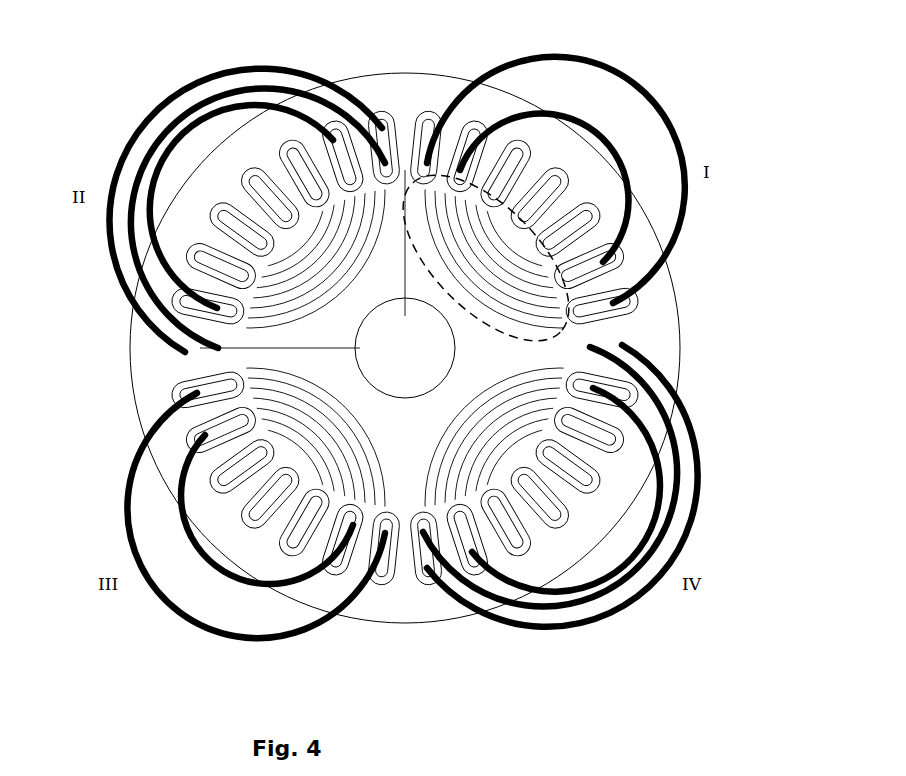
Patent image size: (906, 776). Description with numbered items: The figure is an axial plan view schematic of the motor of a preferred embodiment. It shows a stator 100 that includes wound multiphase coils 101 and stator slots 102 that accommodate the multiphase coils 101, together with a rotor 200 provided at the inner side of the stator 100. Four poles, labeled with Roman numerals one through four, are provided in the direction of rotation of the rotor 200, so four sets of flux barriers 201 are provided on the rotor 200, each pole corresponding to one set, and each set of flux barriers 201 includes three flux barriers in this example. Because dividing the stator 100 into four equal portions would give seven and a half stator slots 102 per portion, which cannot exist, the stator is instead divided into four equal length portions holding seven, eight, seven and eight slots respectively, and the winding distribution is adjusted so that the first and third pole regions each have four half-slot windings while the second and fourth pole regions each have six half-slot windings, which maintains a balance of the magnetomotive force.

The stator 100 is at (394, 100).
The multiphase coils 101 is at (196, 76).
The stator slots 102 is at (429, 116).
The rotor 200 is at (404, 447).
The flux barriers 201 is at (580, 330).